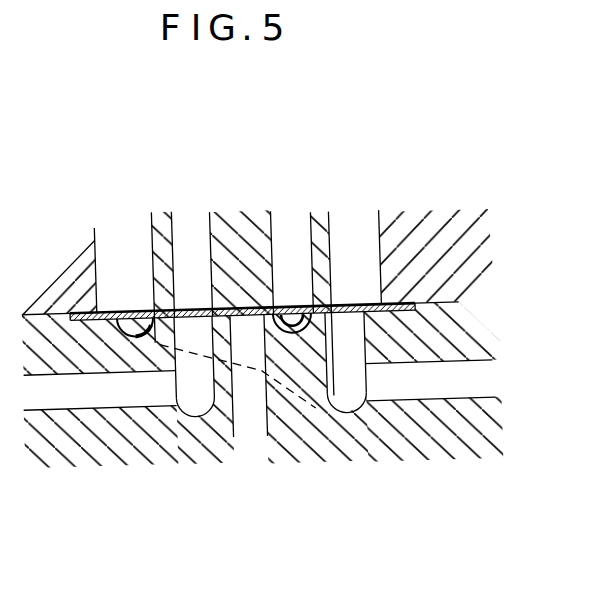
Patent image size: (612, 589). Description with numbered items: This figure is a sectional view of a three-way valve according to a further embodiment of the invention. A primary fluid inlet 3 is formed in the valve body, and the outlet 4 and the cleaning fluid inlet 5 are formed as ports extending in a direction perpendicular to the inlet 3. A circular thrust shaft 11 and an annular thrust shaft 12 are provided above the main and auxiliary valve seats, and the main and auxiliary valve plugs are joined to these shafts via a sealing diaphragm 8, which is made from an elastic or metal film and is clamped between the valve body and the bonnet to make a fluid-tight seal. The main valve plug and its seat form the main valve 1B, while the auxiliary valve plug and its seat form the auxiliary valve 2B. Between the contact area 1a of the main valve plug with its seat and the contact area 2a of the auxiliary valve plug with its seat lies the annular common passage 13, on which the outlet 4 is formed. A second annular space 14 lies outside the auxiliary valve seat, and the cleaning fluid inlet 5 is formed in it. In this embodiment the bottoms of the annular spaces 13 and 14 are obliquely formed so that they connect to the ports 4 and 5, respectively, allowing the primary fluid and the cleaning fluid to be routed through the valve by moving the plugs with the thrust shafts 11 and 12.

The contact area 1a is at (240, 228).
The main valve 1B is at (206, 240).
The auxiliary valve 2B is at (141, 242).
The contact area 2a is at (261, 438).
The primary fluid inlet 3 is at (272, 435).
The outlet 4 is at (101, 433).
The cleaning fluid inlet 5 is at (435, 430).
The sealing diaphragm 8 is at (417, 254).
The circular thrust shaft 11 is at (240, 228).
The annular thrust shaft 12 is at (329, 268).
The common passage 13 is at (244, 385).
The annular space 14 is at (321, 435).